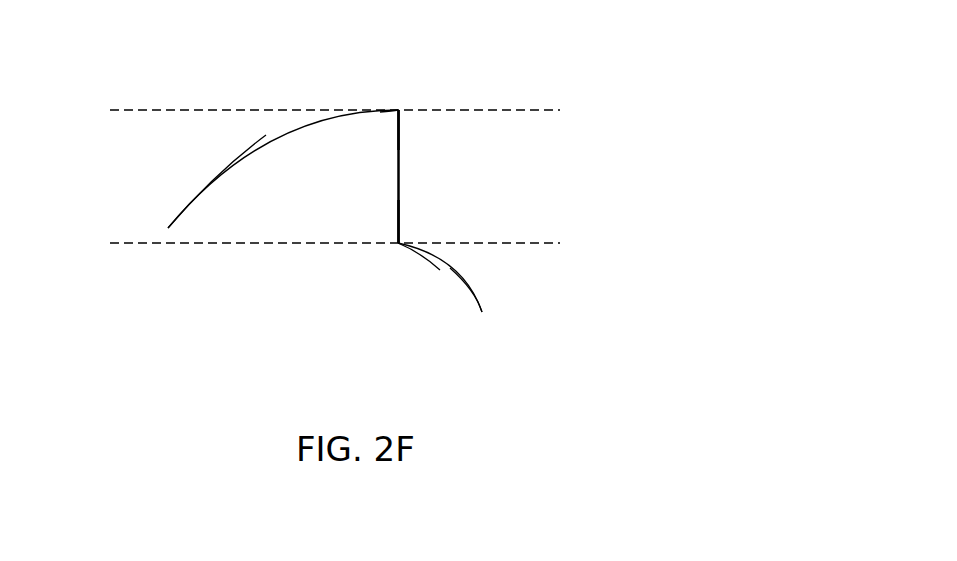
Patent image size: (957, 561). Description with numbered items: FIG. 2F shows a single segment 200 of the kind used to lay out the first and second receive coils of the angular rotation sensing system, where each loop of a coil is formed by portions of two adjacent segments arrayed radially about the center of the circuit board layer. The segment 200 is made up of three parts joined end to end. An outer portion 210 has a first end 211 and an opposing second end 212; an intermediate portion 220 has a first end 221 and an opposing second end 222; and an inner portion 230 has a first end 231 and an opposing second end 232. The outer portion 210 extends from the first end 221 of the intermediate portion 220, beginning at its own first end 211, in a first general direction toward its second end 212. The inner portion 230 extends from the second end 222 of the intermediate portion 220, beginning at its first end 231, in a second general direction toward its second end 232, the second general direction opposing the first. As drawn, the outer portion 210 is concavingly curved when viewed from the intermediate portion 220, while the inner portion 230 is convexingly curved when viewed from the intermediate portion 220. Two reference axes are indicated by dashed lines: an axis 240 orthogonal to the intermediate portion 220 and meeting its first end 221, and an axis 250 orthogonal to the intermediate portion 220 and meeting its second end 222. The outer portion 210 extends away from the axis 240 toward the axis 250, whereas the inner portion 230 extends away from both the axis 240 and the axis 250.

The segment 200 is at (144, 31).
The outer portion 210 is at (247, 148).
The first end of outer portion 211 is at (393, 113).
The second end of outer portion 212 is at (175, 217).
The intermediate portion 220 is at (395, 183).
The first end of intermediate portion 221 is at (400, 117).
The second end of intermediate portion 222 is at (400, 235).
The inner portion 230 is at (450, 268).
The first end of inner portion 231 is at (402, 245).
The second end of inner portion 232 is at (478, 305).
The axis 240 is at (530, 112).
The axis 250 is at (220, 245).